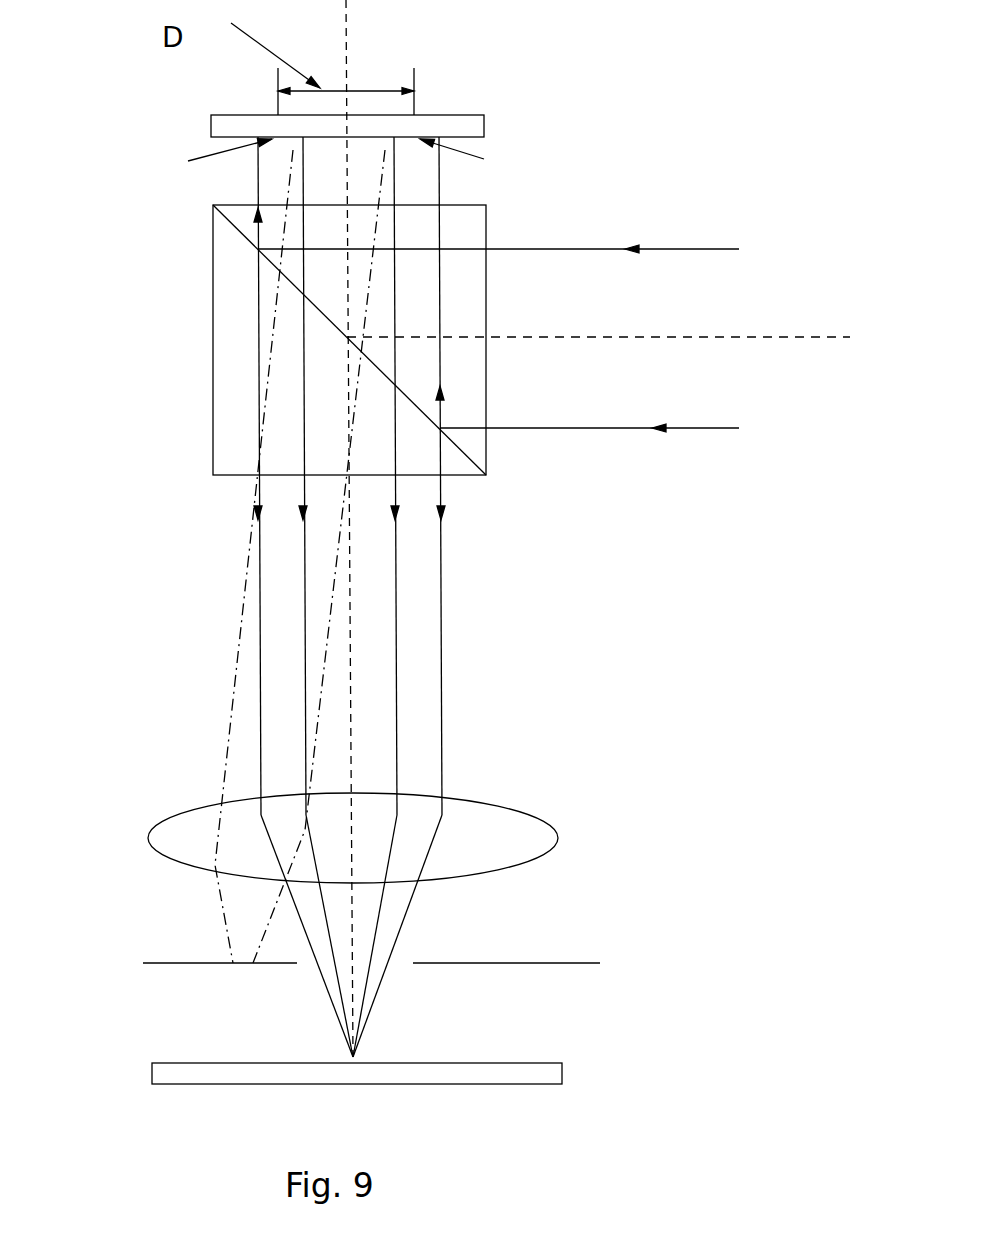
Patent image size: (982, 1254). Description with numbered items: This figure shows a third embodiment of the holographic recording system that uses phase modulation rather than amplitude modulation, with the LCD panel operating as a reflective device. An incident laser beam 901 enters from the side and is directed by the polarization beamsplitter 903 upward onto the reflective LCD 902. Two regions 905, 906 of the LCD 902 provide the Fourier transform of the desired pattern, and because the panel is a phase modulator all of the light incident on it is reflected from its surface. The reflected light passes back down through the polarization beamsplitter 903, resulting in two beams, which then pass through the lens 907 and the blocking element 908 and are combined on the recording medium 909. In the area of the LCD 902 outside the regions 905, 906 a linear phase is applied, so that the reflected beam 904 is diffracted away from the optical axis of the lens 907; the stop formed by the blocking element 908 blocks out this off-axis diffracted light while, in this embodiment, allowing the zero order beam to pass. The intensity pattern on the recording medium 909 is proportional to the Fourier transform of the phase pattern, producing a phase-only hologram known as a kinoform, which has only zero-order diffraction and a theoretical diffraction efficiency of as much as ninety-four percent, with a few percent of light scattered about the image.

The incident laser beam 901 is at (554, 338).
The LCD 902 is at (488, 123).
The polarization beamsplitter 903 is at (212, 317).
The reflected beam 904 is at (212, 743).
The region of the LCD 905 is at (168, 170).
The region of the LCD 906 is at (489, 168).
The lens 907 is at (560, 828).
The blocking element 908 is at (582, 958).
The recording medium 909 is at (570, 1072).